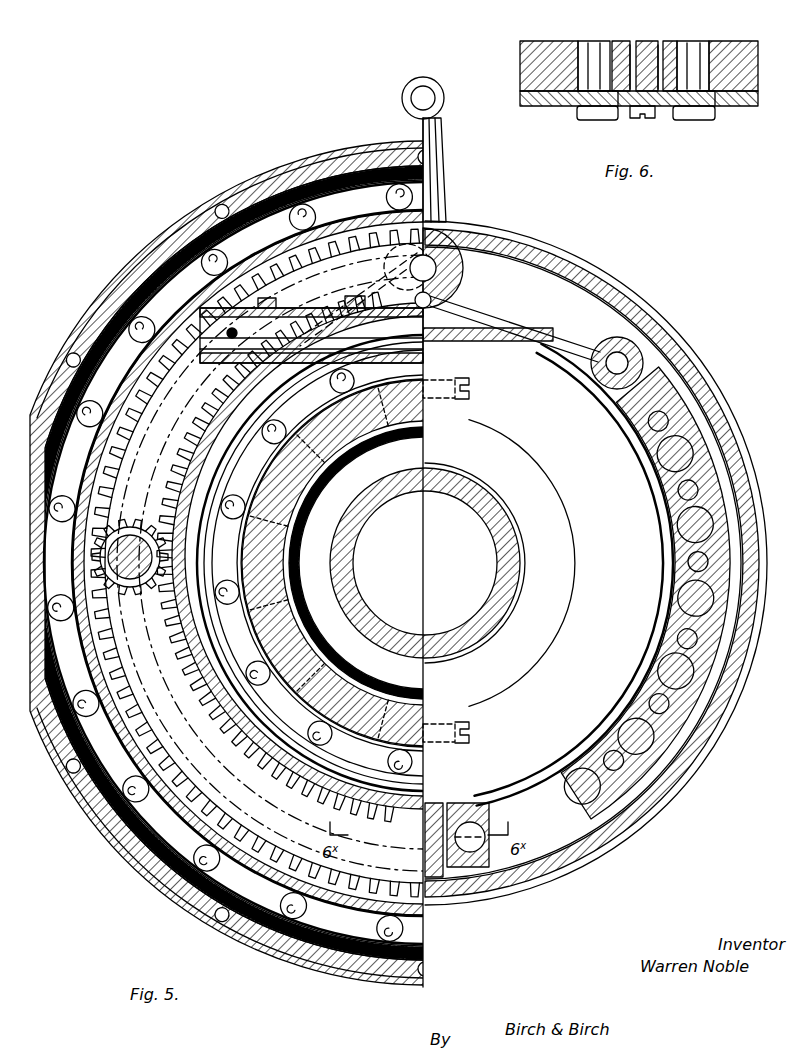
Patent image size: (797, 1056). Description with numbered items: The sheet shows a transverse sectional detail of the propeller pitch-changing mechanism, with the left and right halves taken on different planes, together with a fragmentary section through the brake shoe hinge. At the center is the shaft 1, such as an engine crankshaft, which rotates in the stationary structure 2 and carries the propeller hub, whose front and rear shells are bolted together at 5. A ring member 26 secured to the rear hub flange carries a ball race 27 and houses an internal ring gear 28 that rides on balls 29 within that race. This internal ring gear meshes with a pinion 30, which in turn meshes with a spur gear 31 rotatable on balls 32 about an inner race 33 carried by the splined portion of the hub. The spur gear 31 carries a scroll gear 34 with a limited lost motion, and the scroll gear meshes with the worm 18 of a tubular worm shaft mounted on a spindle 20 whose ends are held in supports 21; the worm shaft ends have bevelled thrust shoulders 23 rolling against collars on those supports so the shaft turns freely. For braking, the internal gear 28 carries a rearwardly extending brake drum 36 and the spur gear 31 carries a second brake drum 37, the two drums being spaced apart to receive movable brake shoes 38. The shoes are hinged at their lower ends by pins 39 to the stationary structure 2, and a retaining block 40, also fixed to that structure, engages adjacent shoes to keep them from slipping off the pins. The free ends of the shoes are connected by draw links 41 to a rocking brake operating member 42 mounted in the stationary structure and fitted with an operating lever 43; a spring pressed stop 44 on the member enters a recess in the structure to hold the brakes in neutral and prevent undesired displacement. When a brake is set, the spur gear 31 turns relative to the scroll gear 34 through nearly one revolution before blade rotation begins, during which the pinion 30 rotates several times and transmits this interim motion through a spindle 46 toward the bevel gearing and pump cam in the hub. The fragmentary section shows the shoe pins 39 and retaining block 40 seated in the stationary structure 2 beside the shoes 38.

In FIG. 5, the shaft 1 is at (480, 512).
In FIG. 6, the stationary structure 2 is at (560, 100).
In FIG. 5, the bolts 5 is at (458, 384).
In FIG. 5, the worm 18 is at (395, 280).
In FIG. 5, the spindle 20 is at (330, 330).
In FIG. 5, the supports 21 is at (195, 370).
In FIG. 5, the bevelled thrust shoulders 23 is at (262, 308).
In FIG. 5, the ring member 26 is at (180, 900).
In FIG. 5, the ball race 27 is at (137, 866).
In FIG. 5, the internal ring gear 28 is at (150, 690).
In FIG. 5, the balls 29 is at (103, 833).
In FIG. 5, the pinion 30 is at (132, 528).
In FIG. 5, the spur gear 31 is at (210, 708).
In FIG. 5, the balls 32 is at (275, 770).
In FIG. 5, the inner race 33 is at (372, 735).
In FIG. 5, the scroll gear 34 is at (200, 434).
In FIG. 5, the brake drum 36 is at (680, 368).
In FIG. 5, the brake drum 37 is at (615, 440).
In FIG. 5, the brake shoes 38 is at (120, 368).
In FIG. 6, the brake shoes 38 is at (550, 48).
In FIG. 5, the pins 39 is at (476, 850).
In FIG. 6, the pins 39 is at (592, 55).
In FIG. 5, the retaining block 40 is at (437, 878).
In FIG. 6, the retaining block 40 is at (655, 48).
In FIG. 5, the draw links 41 is at (355, 300).
In FIG. 5, the brake operating member 42 is at (463, 285).
In FIG. 5, the operating lever 43 is at (446, 175).
In FIG. 5, the spring pressed stop 44 is at (322, 635).
In FIG. 5, the spindle 46 is at (132, 600).